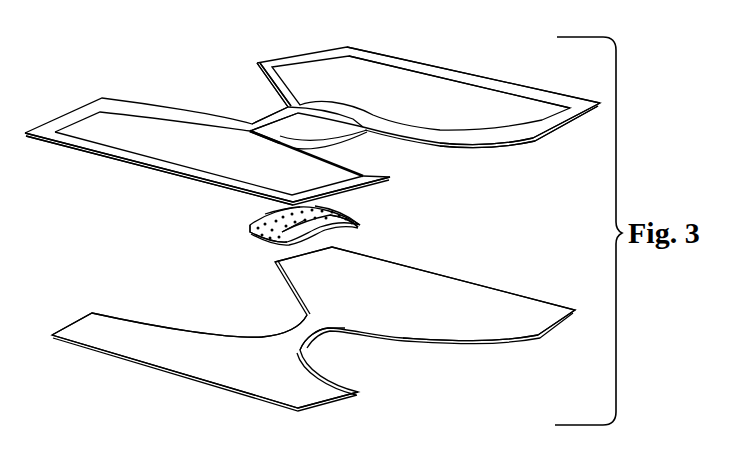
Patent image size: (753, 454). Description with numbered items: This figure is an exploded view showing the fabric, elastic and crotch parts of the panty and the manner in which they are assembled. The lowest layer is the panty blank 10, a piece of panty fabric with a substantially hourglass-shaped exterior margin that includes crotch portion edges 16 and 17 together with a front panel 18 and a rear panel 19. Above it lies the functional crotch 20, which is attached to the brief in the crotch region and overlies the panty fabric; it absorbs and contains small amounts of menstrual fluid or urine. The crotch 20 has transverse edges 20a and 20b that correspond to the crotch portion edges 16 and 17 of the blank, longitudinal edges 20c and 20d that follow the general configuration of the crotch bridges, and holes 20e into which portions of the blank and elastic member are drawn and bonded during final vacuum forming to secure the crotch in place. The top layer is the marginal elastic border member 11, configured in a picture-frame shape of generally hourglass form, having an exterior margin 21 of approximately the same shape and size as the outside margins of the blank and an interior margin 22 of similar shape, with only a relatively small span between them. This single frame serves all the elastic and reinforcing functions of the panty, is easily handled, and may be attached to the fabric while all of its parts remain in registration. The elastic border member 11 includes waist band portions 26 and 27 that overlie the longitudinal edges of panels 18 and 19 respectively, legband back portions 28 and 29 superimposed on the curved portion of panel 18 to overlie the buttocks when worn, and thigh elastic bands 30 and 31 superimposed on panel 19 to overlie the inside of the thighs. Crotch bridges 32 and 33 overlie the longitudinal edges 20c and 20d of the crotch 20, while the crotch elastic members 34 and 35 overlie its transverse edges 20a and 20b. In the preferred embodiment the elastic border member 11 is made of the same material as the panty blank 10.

The panty blank 10 is at (493, 302).
The marginal elastic border member 11 is at (562, 118).
The crotch portion edge 16 is at (288, 327).
The crotch portion edge 17 is at (313, 340).
The front panel 18 is at (443, 285).
The rear panel 19 is at (207, 365).
The functional crotch 20 is at (365, 223).
The transverse edge 20a is at (347, 226).
The transverse edge 20b is at (287, 220).
The longitudinal edge 20c is at (262, 232).
The longitudinal edge 20d is at (333, 214).
The holes 20e is at (282, 233).
The exterior margin 21 is at (482, 75).
The interior margin 22 is at (470, 86).
The waist band portion 26 is at (415, 67).
The waist band portion 27 is at (100, 153).
The legband back portion 28 is at (488, 146).
The legband back portion 29 is at (266, 60).
The thigh elastic band 30 is at (378, 177).
The thigh elastic band 31 is at (135, 108).
The crotch bridge 32 is at (262, 143).
The crotch bridge 33 is at (355, 110).
The crotch elastic member 34 is at (330, 144).
The crotch elastic member 35 is at (268, 120).